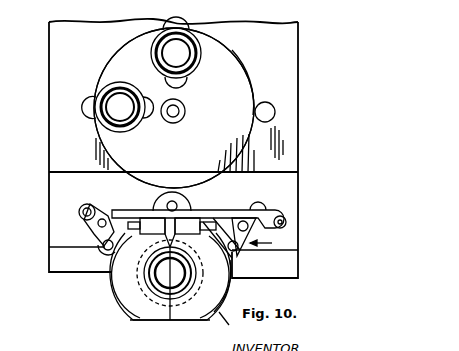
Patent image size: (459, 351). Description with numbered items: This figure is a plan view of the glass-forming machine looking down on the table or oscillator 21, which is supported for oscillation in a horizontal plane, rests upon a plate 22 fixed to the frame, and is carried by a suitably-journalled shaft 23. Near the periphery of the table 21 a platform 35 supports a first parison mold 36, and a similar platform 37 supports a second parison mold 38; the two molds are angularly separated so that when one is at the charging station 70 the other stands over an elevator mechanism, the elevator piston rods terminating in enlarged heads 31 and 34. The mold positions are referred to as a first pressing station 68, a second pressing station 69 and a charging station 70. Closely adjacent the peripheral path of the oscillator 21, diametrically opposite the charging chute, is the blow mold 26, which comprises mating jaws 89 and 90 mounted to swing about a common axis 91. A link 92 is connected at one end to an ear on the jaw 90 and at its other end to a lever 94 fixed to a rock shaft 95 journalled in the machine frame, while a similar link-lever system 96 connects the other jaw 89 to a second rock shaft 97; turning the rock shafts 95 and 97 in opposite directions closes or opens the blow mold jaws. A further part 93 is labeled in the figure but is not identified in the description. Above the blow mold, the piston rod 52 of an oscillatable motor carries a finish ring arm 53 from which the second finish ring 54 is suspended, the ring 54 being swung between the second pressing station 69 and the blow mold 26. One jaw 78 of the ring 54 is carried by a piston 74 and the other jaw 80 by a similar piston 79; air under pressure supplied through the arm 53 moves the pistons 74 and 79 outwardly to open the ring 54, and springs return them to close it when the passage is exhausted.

The table or oscillator 21 is at (234, 76).
The plate 22 is at (299, 79).
The shaft 23 is at (186, 110).
The blow mold 26 is at (115, 315).
The enlarged head 31 is at (84, 108).
The enlarged head 34 is at (270, 104).
The platform 35 is at (97, 116).
The first parison mold 36 is at (122, 86).
The platform 37 is at (180, 83).
The second parison mold 38 is at (195, 58).
The piston rod 52 is at (287, 222).
The finish ring arm 53 is at (202, 208).
The second finish ring 54 is at (142, 282).
The first pressing station 68 is at (100, 74).
The second pressing station 69 is at (251, 89).
The charging station 70 is at (192, 30).
The piston 74 is at (158, 219).
The jaw 78 is at (120, 280).
The piston 79 is at (188, 218).
The jaw 80 is at (236, 262).
The jaw 89 is at (229, 299).
The jaw 90 is at (120, 304).
The common axis 91 is at (175, 201).
The link 92 is at (96, 232).
The pivot 93 is at (100, 252).
The lever 94 is at (102, 218).
The rock shaft 95 is at (78, 212).
The link-lever system 96 is at (298, 250).
The second rock shaft 97 is at (266, 208).